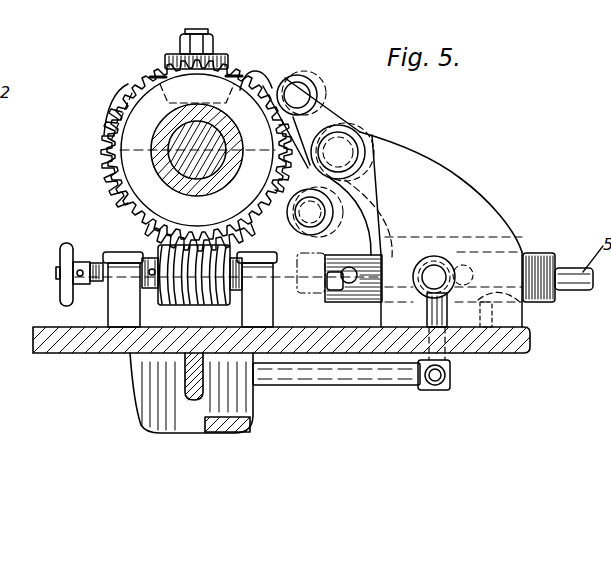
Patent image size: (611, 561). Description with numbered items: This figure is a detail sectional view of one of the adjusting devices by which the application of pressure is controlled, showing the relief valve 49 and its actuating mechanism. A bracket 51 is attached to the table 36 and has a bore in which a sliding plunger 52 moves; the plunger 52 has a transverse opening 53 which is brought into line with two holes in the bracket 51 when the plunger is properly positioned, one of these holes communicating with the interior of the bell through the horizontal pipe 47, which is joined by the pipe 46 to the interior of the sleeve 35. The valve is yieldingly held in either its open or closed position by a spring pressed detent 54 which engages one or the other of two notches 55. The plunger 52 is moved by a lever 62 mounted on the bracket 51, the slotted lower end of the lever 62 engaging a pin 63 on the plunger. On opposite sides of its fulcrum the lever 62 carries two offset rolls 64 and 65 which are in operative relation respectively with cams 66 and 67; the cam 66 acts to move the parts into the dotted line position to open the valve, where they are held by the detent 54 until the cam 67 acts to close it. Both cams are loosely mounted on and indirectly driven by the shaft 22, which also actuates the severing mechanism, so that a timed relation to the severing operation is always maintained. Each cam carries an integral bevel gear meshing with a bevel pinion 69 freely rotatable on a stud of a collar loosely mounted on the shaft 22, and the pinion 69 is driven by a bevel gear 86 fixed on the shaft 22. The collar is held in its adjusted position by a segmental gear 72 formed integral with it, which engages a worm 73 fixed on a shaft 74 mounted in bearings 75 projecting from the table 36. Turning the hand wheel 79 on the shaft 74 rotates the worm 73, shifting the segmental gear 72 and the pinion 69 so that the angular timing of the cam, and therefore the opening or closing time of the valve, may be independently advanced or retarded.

The shaft 22 is at (167, 138).
The bevel gear 86 is at (120, 136).
The segmental gear 72 is at (103, 177).
The bevel pinion 69 is at (158, 78).
The cam 67 is at (112, 97).
The cam 66 is at (281, 78).
The roll 64 is at (295, 80).
The lever 62 is at (333, 117).
The roll 65 is at (295, 228).
The bracket 51 is at (480, 195).
The relief valve 49 is at (522, 250).
The transverse opening 53 is at (470, 265).
The plunger 52 is at (547, 255).
The notches 55 is at (527, 307).
The spring pressed detent 54 is at (492, 312).
The pin 63 is at (349, 283).
The bearings 75 is at (128, 252).
The worm 73 is at (185, 303).
The shaft 74 is at (93, 263).
The hand wheel 79 is at (62, 298).
The table 36 is at (525, 347).
The sleeve 35 is at (140, 410).
The pipe 46 is at (358, 387).
The horizontal pipe 47 is at (448, 385).